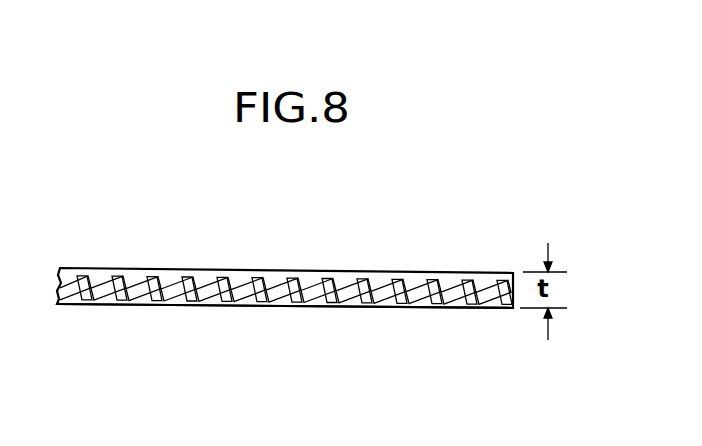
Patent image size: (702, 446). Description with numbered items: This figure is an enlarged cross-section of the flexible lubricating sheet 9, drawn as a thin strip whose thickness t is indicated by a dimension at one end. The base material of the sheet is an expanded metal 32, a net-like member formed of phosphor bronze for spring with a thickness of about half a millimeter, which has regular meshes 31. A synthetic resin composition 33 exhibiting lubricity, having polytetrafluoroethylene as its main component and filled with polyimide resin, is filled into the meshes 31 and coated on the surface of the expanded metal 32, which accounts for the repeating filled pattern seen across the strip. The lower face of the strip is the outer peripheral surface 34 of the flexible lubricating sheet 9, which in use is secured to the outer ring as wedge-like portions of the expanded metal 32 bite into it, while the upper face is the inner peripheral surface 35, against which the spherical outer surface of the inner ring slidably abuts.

The flexible lubricating sheet 9 is at (165, 271).
The inner peripheral surface 35 is at (230, 271).
The expanded metal 32 is at (293, 276).
The synthetic resin composition 33 is at (383, 273).
The meshes 31 is at (445, 273).
The outer peripheral surface 34 is at (390, 308).